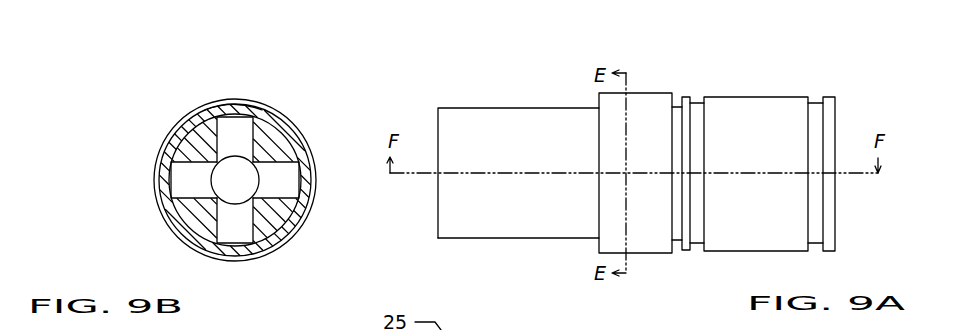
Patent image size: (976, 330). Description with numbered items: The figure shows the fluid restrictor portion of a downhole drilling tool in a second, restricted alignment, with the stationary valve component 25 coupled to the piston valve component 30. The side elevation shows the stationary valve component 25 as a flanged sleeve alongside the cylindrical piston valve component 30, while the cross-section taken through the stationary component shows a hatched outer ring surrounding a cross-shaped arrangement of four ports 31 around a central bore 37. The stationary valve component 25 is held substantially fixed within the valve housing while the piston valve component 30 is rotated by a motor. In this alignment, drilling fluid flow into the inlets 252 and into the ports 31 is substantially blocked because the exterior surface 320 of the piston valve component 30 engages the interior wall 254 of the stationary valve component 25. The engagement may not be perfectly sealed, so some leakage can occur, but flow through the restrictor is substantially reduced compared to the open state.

In FIG. 9B, the stationary valve component 25 is at (162, 160).
In FIG. 9A, the stationary valve component 25 is at (663, 153).
In FIG. 9B, the piston valve component 30 is at (268, 147).
In FIG. 9A, the piston valve component 30 is at (527, 151).
In FIG. 9B, the ports 31 is at (223, 146).
In FIG. 9B, the central bore 37 is at (223, 190).
In FIG. 9B, the inlets 252 is at (175, 221).
In FIG. 9B, the interior wall 254 is at (222, 110).
In FIG. 9B, the exterior surface 320 is at (282, 218).
In FIG. 9A, the exterior surface 320 is at (545, 239).